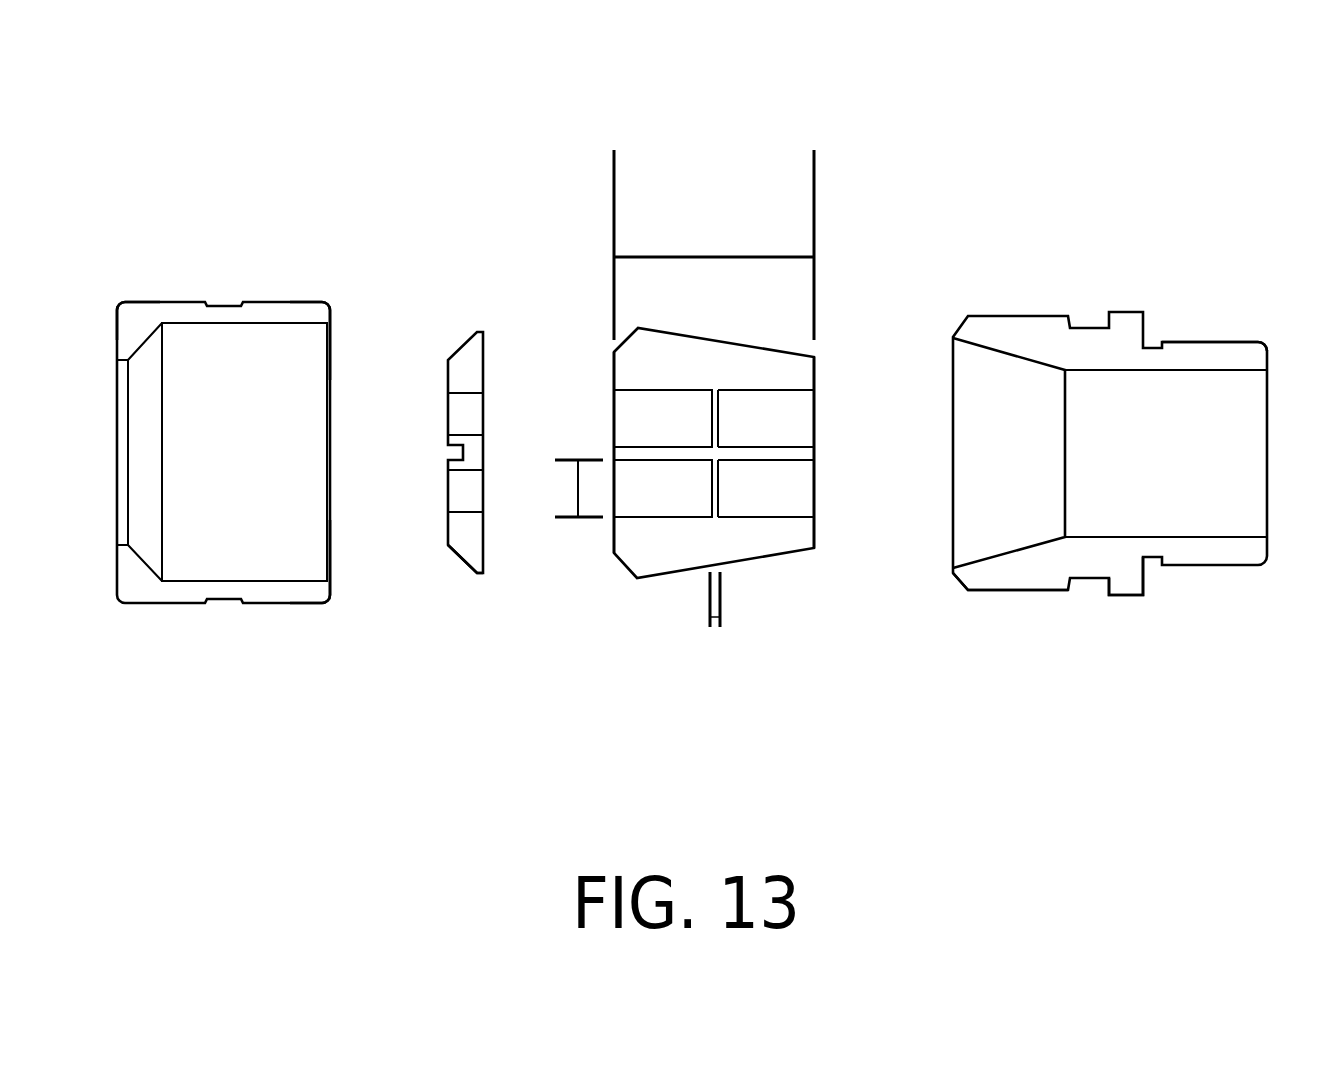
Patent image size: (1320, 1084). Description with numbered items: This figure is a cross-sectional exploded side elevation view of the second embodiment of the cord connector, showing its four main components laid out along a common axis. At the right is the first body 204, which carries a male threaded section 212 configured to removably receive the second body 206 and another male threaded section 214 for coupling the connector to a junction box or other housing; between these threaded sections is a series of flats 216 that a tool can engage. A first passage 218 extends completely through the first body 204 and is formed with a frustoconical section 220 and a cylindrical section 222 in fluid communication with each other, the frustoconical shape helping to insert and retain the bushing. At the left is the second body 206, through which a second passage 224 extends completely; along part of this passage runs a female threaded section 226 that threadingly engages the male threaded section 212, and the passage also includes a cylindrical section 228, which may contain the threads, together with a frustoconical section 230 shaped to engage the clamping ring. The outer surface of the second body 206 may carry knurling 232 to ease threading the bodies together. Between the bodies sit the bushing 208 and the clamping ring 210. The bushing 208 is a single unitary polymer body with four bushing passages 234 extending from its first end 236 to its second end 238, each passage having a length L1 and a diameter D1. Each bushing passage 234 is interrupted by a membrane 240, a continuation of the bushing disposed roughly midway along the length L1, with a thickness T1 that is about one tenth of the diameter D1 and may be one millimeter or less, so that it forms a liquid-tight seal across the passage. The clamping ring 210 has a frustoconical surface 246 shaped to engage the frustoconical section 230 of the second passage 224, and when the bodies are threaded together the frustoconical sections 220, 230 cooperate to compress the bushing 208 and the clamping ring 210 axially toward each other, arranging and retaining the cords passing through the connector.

The first body 204 is at (1110, 375).
The second body 206 is at (223, 543).
The bushing 208 is at (714, 545).
The clamping ring 210 is at (519, 362).
The male threaded section 212 is at (1010, 651).
The male threaded section 214 is at (1214, 294).
The series of flats 216 is at (1181, 651).
The first passage 218 is at (914, 326).
The frustoconical section 220 is at (972, 442).
The cylindrical section 222 is at (1187, 498).
The second passage 224 is at (244, 368).
The female threaded section 226 is at (348, 223).
The cylindrical section 228 is at (324, 607).
The frustoconical section 230 is at (129, 517).
The knurling 232 is at (137, 273).
The bushing passages 234 is at (740, 592).
The first end 236 is at (573, 432).
The second end 238 is at (852, 490).
The membrane 240 is at (784, 474).
The frustoconical surface 246 is at (443, 640).
The diameter D1 is at (480, 488).
The length L1 is at (714, 206).
The thickness T1 is at (749, 634).